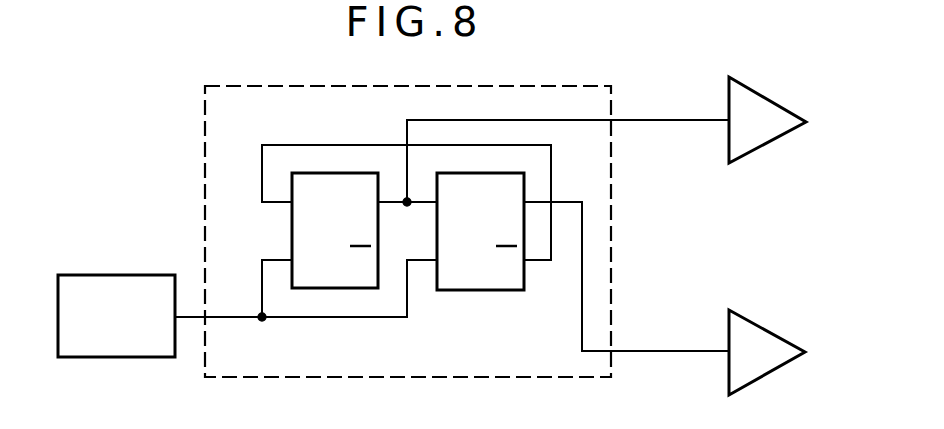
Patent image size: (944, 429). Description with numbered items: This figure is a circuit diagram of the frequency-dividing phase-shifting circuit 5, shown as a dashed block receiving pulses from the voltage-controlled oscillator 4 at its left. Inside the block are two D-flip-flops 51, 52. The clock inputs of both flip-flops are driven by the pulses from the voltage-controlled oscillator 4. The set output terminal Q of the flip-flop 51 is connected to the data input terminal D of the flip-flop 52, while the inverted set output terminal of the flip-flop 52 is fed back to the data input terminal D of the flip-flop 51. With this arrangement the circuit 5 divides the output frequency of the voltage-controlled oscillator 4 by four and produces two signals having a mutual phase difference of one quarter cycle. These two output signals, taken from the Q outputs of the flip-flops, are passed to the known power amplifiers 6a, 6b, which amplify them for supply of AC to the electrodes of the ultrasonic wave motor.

The voltage-controlled oscillator 4 is at (97, 357).
The frequency-dividing phase-shifting circuit 5 is at (293, 377).
The D-flip-flop 51 is at (292, 235).
The D-flip-flop 52 is at (477, 290).
The power amplifier 6a is at (777, 139).
The power amplifier 6b is at (778, 369).